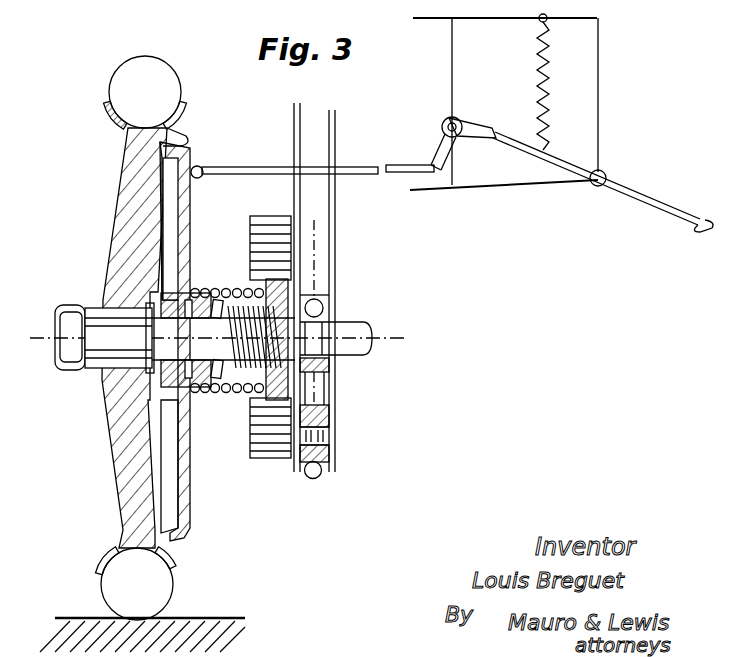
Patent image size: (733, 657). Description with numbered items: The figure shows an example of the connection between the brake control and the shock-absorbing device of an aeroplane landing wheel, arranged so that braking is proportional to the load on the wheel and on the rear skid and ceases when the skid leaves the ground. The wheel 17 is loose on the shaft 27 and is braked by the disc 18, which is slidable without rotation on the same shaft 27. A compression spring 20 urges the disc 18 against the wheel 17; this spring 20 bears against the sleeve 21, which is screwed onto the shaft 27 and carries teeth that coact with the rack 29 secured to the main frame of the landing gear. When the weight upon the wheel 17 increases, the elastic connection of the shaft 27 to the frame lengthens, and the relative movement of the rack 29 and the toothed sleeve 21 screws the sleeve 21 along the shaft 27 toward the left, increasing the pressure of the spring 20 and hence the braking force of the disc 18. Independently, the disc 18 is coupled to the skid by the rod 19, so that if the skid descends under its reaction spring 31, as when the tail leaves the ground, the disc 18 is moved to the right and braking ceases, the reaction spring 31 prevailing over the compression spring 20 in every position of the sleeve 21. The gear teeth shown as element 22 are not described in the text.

The wheel 17 is at (123, 473).
The disc 18 is at (170, 222).
The rod 19 is at (237, 167).
The compression spring 20 is at (222, 290).
The sleeve 21 is at (228, 393).
The gear 22 is at (284, 272).
The shaft 27 is at (346, 333).
The rack 29 is at (277, 453).
The reaction spring 31 is at (549, 78).